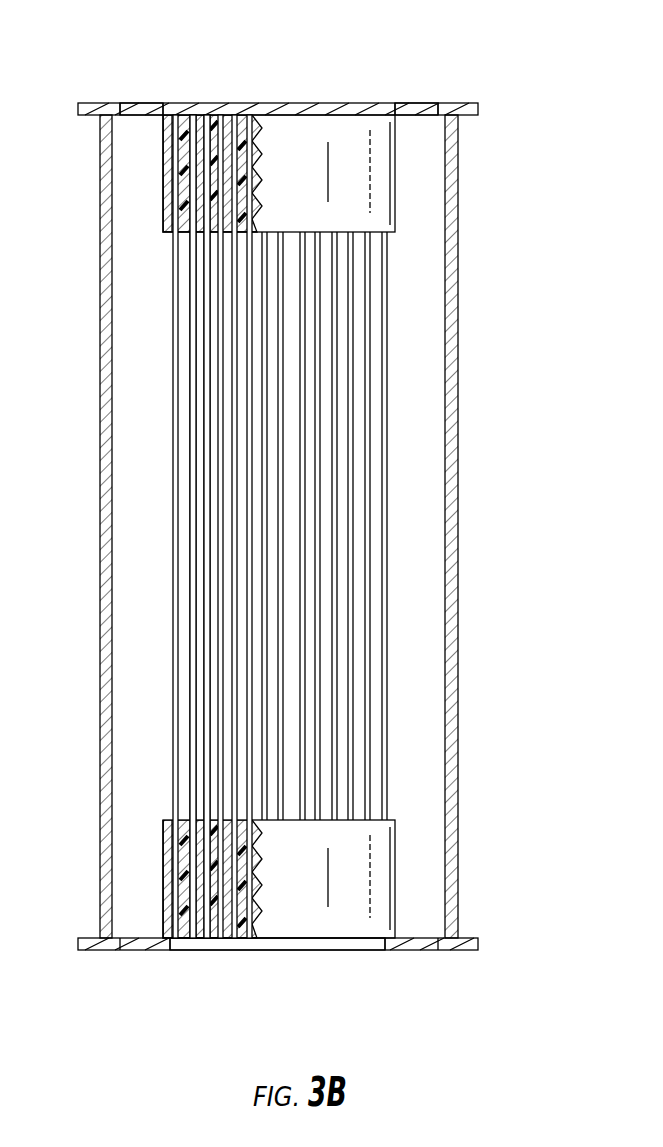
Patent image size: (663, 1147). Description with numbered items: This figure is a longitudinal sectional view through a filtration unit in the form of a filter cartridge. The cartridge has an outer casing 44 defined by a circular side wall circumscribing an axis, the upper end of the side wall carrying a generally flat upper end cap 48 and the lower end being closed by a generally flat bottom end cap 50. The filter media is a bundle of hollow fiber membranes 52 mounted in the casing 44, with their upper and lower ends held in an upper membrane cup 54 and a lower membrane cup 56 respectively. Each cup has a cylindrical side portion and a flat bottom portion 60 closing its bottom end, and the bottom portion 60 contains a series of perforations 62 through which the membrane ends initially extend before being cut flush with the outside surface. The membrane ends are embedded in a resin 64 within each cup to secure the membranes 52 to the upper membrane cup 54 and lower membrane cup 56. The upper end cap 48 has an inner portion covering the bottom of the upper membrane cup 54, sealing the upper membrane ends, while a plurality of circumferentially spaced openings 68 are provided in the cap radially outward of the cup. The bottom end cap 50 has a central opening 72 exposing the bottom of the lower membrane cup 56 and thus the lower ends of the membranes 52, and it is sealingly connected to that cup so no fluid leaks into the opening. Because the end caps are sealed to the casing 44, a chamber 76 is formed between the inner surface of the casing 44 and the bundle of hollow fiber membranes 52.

The outer casing 44 is at (462, 455).
The upper end cap 48 is at (462, 98).
The bottom end cap 50 is at (432, 956).
The hollow fiber membranes 52 is at (394, 535).
The upper membrane cup 54 is at (372, 188).
The lower membrane cup 56 is at (355, 867).
The bottom portion 60 is at (207, 118).
The perforations 62 is at (204, 118).
The resin 64 is at (178, 197).
The openings 68 is at (139, 110).
The central opening 72 is at (386, 939).
The chamber 76 is at (135, 593).